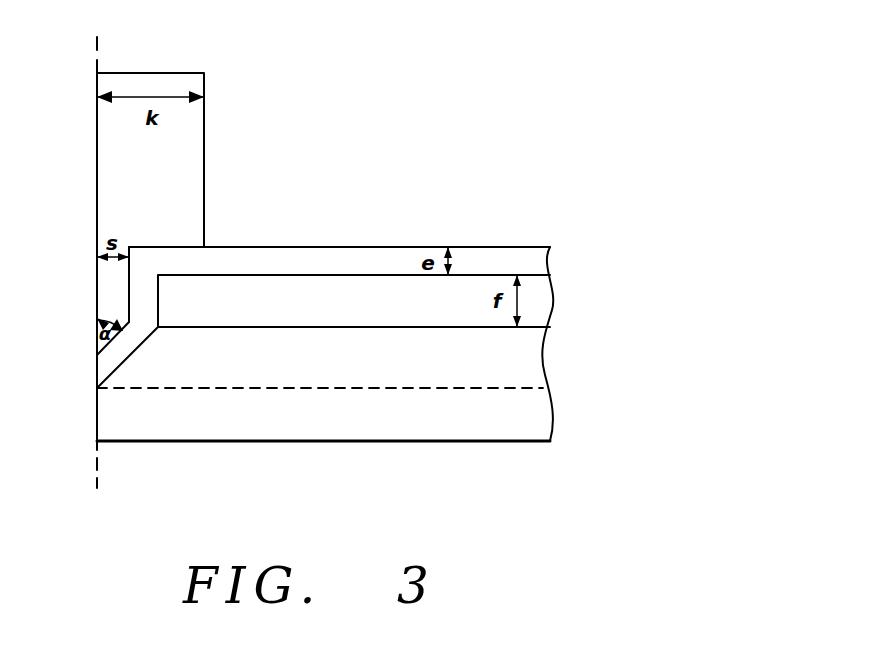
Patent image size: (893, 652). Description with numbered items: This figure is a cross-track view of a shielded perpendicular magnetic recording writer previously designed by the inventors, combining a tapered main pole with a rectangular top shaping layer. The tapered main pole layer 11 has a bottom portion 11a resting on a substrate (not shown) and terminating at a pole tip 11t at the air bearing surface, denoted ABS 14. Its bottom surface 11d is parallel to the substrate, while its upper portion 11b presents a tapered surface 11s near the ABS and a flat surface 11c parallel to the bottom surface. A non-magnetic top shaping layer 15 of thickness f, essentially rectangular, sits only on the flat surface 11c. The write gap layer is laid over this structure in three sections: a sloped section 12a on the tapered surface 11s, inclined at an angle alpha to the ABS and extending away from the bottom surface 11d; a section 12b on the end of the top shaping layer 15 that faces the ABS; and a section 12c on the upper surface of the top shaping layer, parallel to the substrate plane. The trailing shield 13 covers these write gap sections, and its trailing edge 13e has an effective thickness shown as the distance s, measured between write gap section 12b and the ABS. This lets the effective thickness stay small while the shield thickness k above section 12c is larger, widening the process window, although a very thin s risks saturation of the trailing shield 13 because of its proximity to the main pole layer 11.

The main pole layer 11 is at (563, 327).
The bottom portion 11a is at (312, 418).
The upper portion 11b is at (458, 362).
The flat surface 11c is at (232, 328).
The bottom surface 11d is at (382, 443).
The tapered surface 11s is at (142, 343).
The pole tip 11t is at (97, 410).
The sloped section of write gap layer 12a is at (104, 363).
The write gap section on top shaping layer end 12b is at (142, 297).
The write gap section on top shaping layer upper surface 12c is at (340, 260).
The trailing shield 13 is at (184, 115).
The trailing edge 13e is at (127, 320).
The ABS 14 is at (107, 485).
The top shaping layer 15 is at (537, 293).